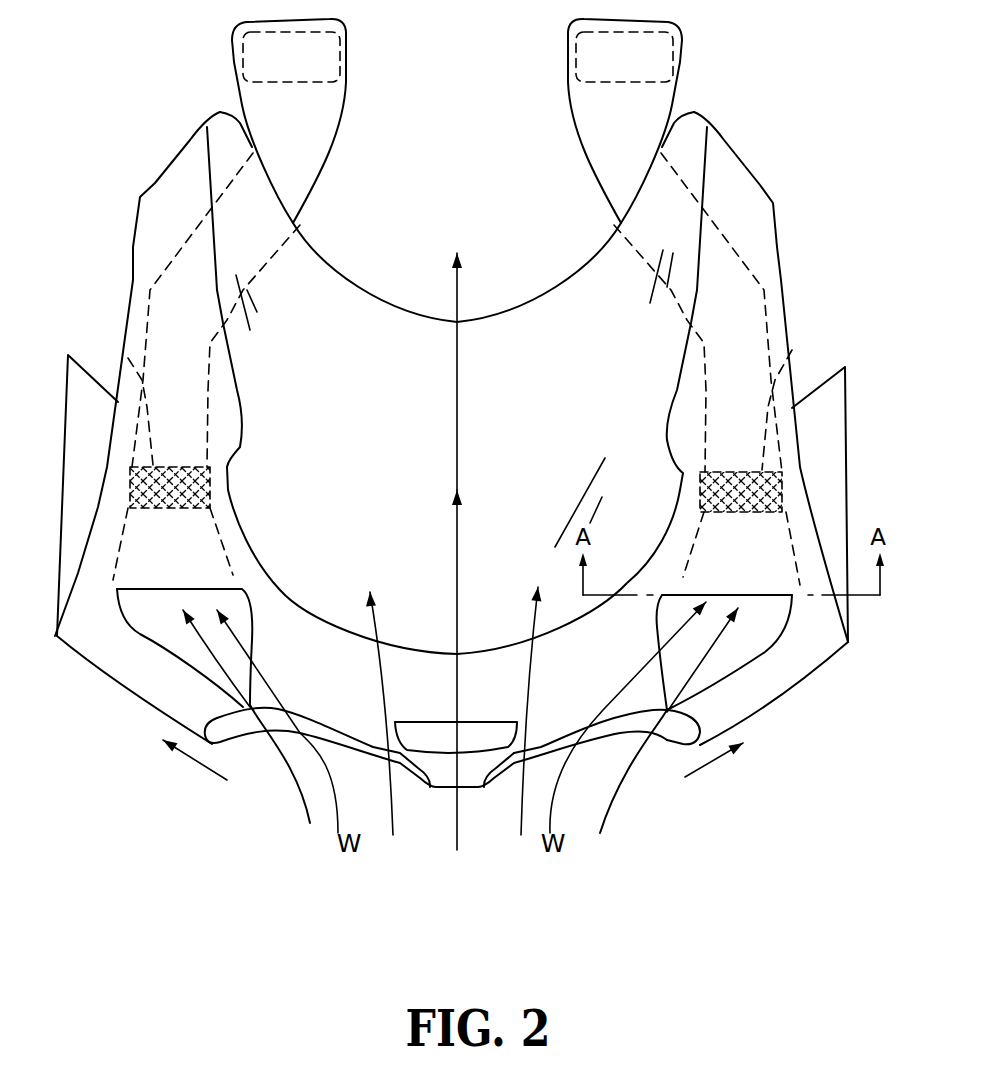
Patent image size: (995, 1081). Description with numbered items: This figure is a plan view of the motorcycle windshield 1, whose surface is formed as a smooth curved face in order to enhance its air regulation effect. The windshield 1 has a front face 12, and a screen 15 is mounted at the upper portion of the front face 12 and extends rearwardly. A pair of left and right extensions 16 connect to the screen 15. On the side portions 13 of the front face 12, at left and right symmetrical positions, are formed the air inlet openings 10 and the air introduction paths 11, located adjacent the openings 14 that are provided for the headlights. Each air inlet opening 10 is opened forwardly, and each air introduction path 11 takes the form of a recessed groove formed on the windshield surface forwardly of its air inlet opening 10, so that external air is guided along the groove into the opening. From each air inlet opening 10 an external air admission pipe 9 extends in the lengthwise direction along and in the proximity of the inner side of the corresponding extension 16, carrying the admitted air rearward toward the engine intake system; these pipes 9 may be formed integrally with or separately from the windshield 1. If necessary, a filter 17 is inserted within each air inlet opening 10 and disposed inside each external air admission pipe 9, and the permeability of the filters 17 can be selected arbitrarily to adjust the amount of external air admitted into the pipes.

The windshield 1 is at (753, 150).
The external air admission pipe 9 is at (295, 178).
The air inlet opening 10 is at (162, 592).
The air introduction path 11 is at (158, 627).
The front face 12 is at (433, 760).
The side portion 13 is at (103, 652).
The opening for headlight 14 is at (237, 724).
The screen 15 is at (396, 330).
The extension 16 is at (150, 233).
The filter 17 is at (128, 358).